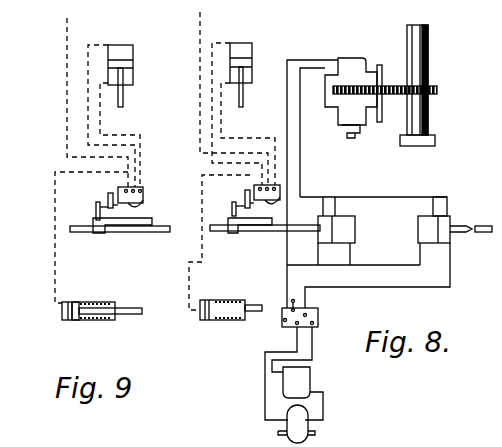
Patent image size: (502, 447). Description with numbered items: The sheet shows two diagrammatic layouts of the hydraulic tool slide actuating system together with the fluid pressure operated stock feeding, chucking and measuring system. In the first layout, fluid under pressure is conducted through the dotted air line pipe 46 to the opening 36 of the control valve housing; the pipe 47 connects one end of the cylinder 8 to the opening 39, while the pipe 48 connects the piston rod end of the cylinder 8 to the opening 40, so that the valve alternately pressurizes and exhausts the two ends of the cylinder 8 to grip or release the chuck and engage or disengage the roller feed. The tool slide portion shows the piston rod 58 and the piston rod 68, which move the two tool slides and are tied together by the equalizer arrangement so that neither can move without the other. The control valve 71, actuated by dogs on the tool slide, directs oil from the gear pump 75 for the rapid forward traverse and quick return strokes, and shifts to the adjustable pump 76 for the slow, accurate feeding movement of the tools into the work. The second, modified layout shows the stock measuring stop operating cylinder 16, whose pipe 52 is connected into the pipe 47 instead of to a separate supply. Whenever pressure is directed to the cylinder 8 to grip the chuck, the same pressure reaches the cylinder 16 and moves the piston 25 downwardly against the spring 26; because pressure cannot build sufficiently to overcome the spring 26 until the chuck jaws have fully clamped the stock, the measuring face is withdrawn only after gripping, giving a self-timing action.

In FIG. 9, the cylinder 8 is at (133, 75).
In FIG. 8, the cylinder 8 is at (252, 55).
In FIG. 9, the stock measuring stop operating cylinder 16 is at (75, 318).
In FIG. 9, the piston 25 is at (62, 315).
In FIG. 9, the spring 26 is at (92, 322).
In FIG. 8, the spring 26 is at (222, 300).
In FIG. 9, the opening 36 is at (143, 200).
In FIG. 8, the opening 36 is at (282, 201).
In FIG. 9, the passage 39 is at (143, 190).
In FIG. 8, the passage 39 is at (281, 190).
In FIG. 8, the passage 40 is at (270, 188).
In FIG. 9, the pipe 46 is at (67, 110).
In FIG. 8, the pipe 46 is at (200, 148).
In FIG. 9, the pipe 47 is at (88, 100).
In FIG. 8, the pipe 47 is at (212, 135).
In FIG. 9, the pipe 48 is at (100, 125).
In FIG. 8, the pipe 48 is at (230, 138).
In FIG. 9, the pipe 52 is at (55, 262).
In FIG. 8, the pipe 52 is at (203, 263).
In FIG. 8, the piston rod 58 is at (462, 232).
In FIG. 8, the piston rod 68 is at (285, 228).
In FIG. 8, the control valve 71 is at (318, 315).
In FIG. 8, the gear pump 75 is at (308, 428).
In FIG. 8, the pump 76 is at (352, 110).